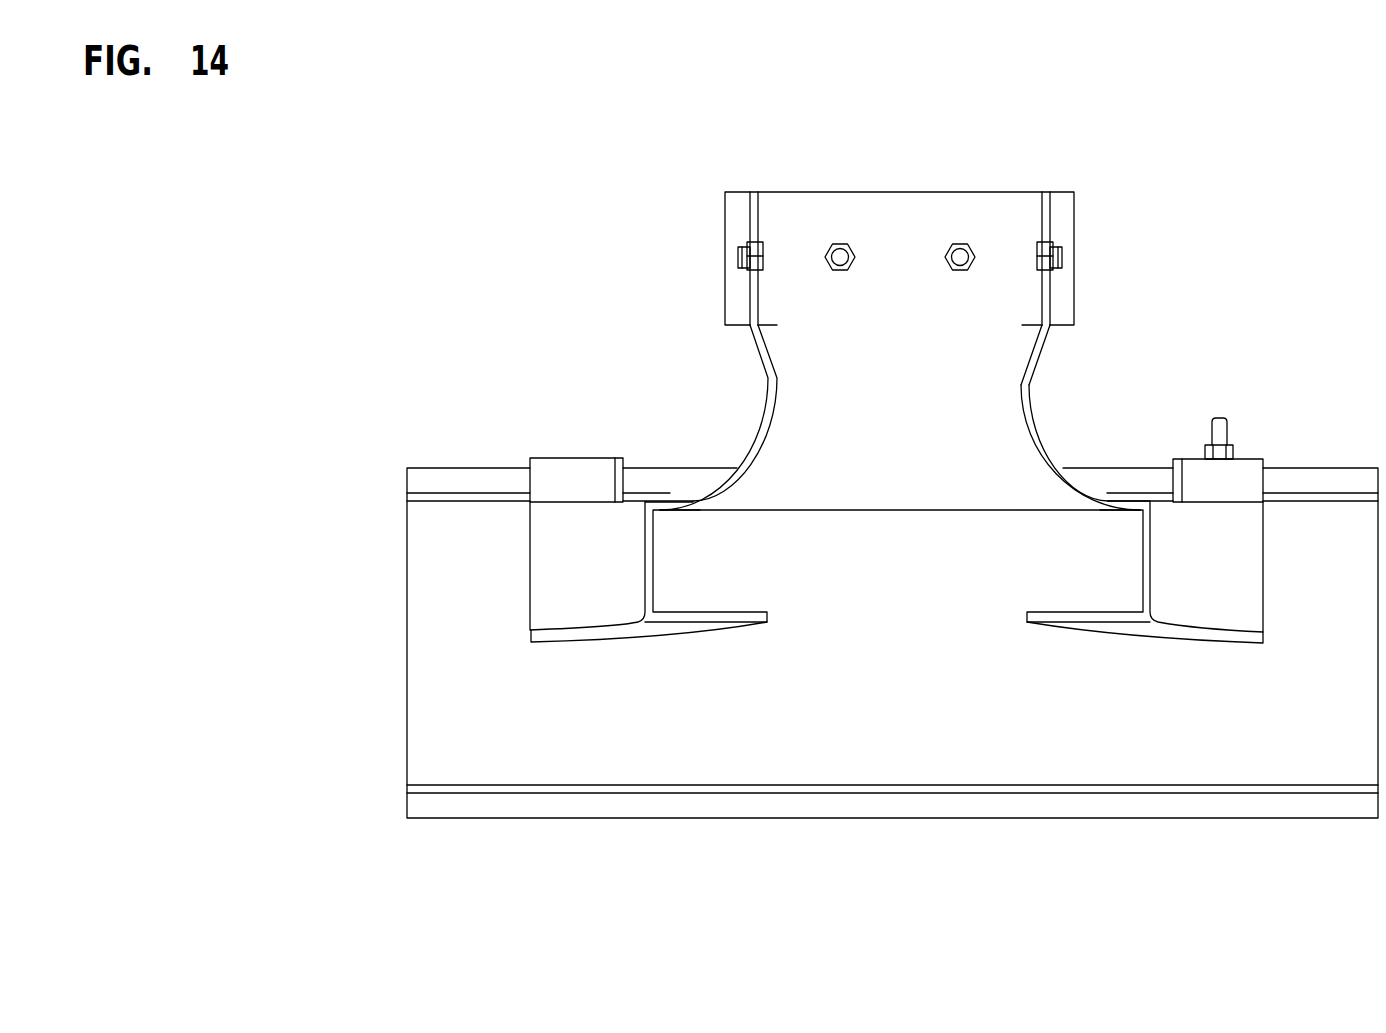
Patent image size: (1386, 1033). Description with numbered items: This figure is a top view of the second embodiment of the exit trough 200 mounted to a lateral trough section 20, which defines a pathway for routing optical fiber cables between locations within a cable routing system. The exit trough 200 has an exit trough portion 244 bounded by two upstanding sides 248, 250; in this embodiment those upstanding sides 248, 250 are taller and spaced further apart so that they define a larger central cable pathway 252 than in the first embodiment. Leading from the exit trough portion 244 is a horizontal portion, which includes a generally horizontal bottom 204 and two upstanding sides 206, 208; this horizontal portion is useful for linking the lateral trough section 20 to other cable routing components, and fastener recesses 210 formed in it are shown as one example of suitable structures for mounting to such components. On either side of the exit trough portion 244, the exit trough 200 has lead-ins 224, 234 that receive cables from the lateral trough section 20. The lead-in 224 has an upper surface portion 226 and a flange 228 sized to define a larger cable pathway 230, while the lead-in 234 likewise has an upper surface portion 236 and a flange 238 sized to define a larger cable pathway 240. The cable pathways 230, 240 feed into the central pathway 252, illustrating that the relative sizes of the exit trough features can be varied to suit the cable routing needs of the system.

The lateral trough section 20 is at (820, 818).
The exit trough 200 is at (915, 305).
The generally horizontal bottom 204 is at (918, 376).
The upstanding side 206 is at (1042, 213).
The upstanding side 208 is at (758, 213).
The fastener recesses 210 is at (762, 247).
The lead-in 224 is at (530, 530).
The upper surface portion 226 is at (573, 587).
The flange 228 is at (655, 630).
The cable pathway 230 is at (746, 572).
The lead-in 234 is at (1265, 533).
The upper surface portion 236 is at (1217, 593).
The flange 238 is at (1138, 630).
The cable pathway 240 is at (1100, 572).
The exit trough portion 244 is at (1052, 455).
The upstanding side 248 is at (757, 435).
The upstanding side 250 is at (1032, 380).
The cable pathway 252 is at (918, 462).